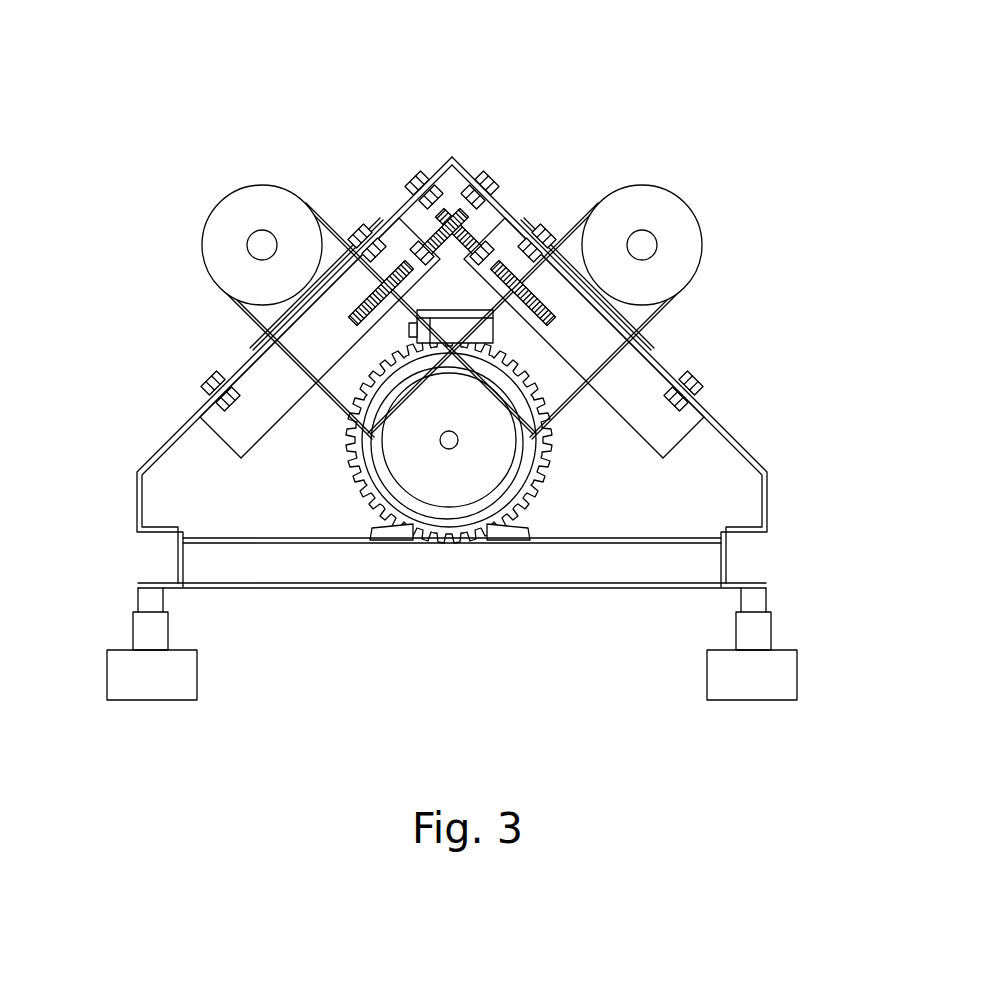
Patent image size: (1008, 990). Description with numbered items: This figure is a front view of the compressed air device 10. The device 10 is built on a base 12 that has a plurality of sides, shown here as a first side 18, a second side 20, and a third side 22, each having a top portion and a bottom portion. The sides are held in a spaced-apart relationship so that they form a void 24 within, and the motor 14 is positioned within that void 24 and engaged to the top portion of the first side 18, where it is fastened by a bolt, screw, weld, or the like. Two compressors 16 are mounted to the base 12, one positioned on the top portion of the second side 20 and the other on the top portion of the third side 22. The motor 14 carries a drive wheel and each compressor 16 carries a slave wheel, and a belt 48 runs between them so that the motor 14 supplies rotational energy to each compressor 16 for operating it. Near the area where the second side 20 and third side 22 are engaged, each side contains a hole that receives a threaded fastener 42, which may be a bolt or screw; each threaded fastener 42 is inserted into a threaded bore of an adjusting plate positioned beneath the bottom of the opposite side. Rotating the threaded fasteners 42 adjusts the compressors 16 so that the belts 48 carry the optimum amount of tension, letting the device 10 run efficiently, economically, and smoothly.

The compressed air device 10 is at (562, 95).
The base 12 is at (302, 648).
The motor 14 is at (457, 473).
The compressor 16 is at (254, 192).
The first side 18 is at (595, 573).
The second side 20 is at (157, 452).
The third side 22 is at (757, 462).
The void 24 is at (725, 497).
The threaded fastener 42 is at (462, 198).
The belt 48 is at (258, 330).